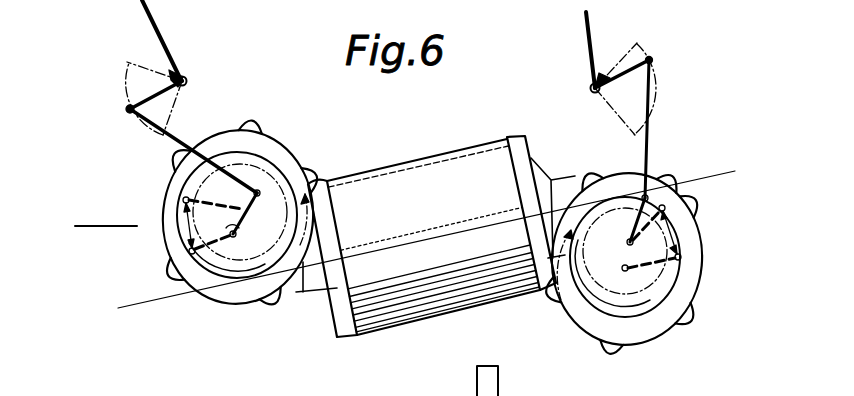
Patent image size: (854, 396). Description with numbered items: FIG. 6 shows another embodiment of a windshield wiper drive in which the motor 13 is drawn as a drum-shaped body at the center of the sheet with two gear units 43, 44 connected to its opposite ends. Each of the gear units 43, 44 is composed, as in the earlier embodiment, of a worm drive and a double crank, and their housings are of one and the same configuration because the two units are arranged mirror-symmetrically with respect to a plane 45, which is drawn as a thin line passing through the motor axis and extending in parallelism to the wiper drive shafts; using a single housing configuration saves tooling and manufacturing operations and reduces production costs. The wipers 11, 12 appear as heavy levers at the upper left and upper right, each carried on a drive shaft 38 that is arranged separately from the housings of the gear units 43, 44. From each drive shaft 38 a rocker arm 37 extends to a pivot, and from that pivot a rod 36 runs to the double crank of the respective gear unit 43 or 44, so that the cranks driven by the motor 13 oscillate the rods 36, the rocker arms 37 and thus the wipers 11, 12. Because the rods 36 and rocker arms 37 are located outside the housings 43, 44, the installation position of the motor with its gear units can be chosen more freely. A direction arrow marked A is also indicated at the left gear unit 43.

The wiper 11 is at (147, 20).
The wiper 12 is at (593, 35).
The motor 13 is at (417, 188).
The rod 36 is at (152, 130).
The rocker arm 37 is at (135, 92).
The drive shaft 38 is at (186, 77).
The gear unit 43 is at (170, 232).
The gear unit 44 is at (692, 264).
The plane 45 is at (722, 172).
The direction A is at (95, 223).